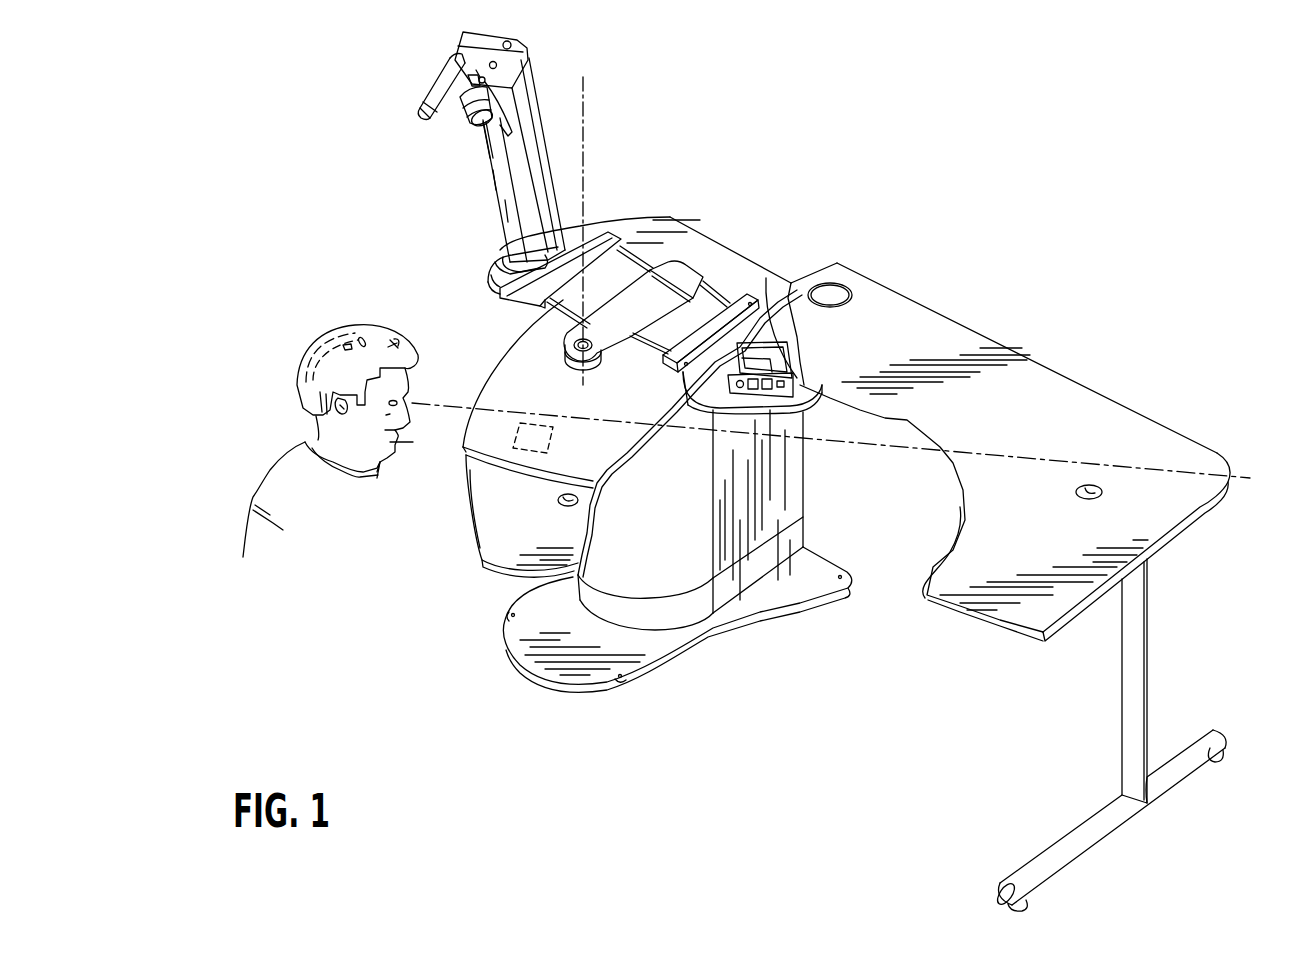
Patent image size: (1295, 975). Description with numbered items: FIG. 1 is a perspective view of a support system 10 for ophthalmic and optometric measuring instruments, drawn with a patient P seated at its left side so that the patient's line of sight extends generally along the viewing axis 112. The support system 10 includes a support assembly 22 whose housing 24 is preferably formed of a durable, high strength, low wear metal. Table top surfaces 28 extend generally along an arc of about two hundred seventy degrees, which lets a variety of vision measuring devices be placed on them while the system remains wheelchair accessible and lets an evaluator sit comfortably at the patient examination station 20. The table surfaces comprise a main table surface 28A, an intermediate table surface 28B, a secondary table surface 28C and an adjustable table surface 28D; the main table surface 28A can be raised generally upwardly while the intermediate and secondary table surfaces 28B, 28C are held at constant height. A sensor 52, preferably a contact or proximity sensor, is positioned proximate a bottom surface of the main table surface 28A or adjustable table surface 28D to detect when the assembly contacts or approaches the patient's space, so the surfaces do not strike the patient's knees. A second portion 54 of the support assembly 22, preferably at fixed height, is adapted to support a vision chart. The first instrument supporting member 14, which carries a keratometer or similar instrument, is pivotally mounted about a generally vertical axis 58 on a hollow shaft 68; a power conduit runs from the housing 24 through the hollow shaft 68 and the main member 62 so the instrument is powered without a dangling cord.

The support system 10 is at (863, 254).
The first instrument supporting member 14 is at (677, 277).
The patient examination station 20 is at (862, 412).
The support assembly 22 is at (777, 277).
The housing 24 is at (665, 536).
The table top surfaces 28 is at (538, 392).
The main table surface 28A is at (641, 401).
The intermediate table surface 28B is at (783, 330).
The secondary table surface 28C is at (1044, 551).
The adjustable table surface 28D is at (540, 536).
The sensor 52 is at (490, 458).
The second portion 54 is at (1070, 410).
The vertical axis 58 is at (585, 108).
The main member 62 is at (640, 297).
The hollow shaft 68 is at (568, 343).
The axis 112 is at (880, 443).
The patient P is at (303, 470).